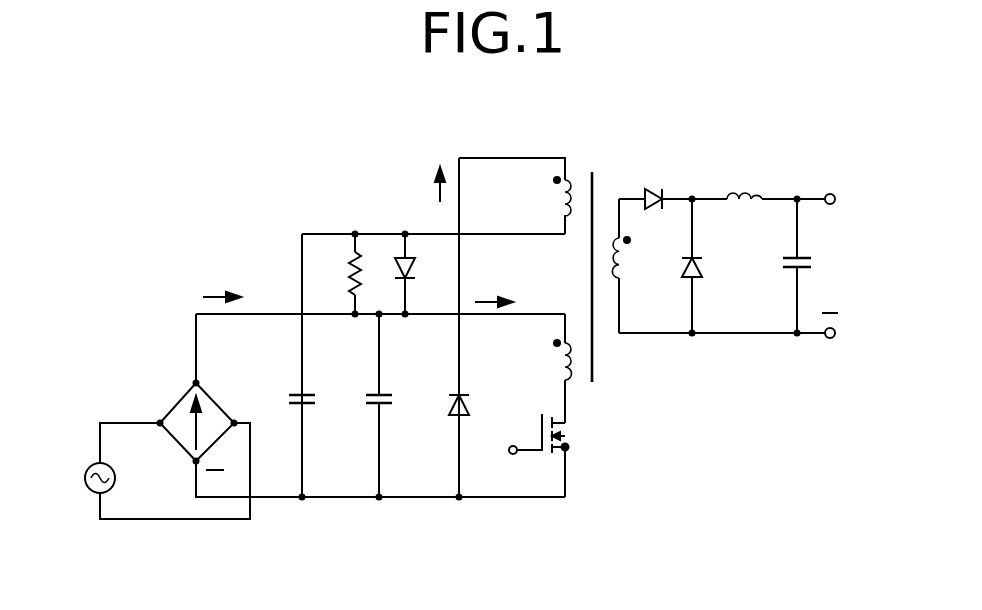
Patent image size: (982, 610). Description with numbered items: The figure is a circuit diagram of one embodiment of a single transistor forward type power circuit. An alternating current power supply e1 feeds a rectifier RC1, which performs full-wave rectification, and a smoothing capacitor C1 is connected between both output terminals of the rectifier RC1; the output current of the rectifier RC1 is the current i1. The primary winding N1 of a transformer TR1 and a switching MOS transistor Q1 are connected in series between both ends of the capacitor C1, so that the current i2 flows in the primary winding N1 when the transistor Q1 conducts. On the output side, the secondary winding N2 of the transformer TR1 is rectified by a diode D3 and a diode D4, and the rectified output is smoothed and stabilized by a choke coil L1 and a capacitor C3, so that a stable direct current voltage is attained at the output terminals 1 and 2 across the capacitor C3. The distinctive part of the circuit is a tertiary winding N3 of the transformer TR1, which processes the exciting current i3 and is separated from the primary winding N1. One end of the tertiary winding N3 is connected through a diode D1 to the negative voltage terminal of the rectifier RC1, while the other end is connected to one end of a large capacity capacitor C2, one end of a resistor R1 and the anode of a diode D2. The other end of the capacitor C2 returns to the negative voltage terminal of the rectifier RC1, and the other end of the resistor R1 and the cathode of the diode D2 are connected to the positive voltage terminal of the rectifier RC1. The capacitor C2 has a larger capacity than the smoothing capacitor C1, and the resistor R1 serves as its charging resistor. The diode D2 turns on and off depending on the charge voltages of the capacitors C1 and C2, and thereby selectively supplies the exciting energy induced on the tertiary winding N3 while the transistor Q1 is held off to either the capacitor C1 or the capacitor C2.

The rectifier RC1 is at (189, 414).
The alternating current power supply e1 is at (156, 471).
The large capacity capacitor C2 is at (310, 378).
The smoothing capacitor C1 is at (390, 387).
The resistor R1 is at (337, 273).
The diode D2 is at (423, 270).
The diode D1 is at (478, 393).
The tertiary winding N3 is at (546, 196).
The primary winding N1 is at (551, 360).
The secondary winding N2 is at (637, 266).
The transformer TR1 is at (599, 258).
The switching MOS transistor Q1 is at (561, 446).
The output current of the rectifier i1 is at (222, 282).
The current of the primary winding i2 is at (494, 290).
The exciting current i3 is at (428, 184).
The diode D3 is at (660, 182).
The choke coil L1 is at (762, 183).
The diode D4 is at (712, 266).
The capacitor C3 is at (814, 266).
The end of the capacitor 1 is at (839, 188).
The end of the capacitor 2 is at (839, 329).